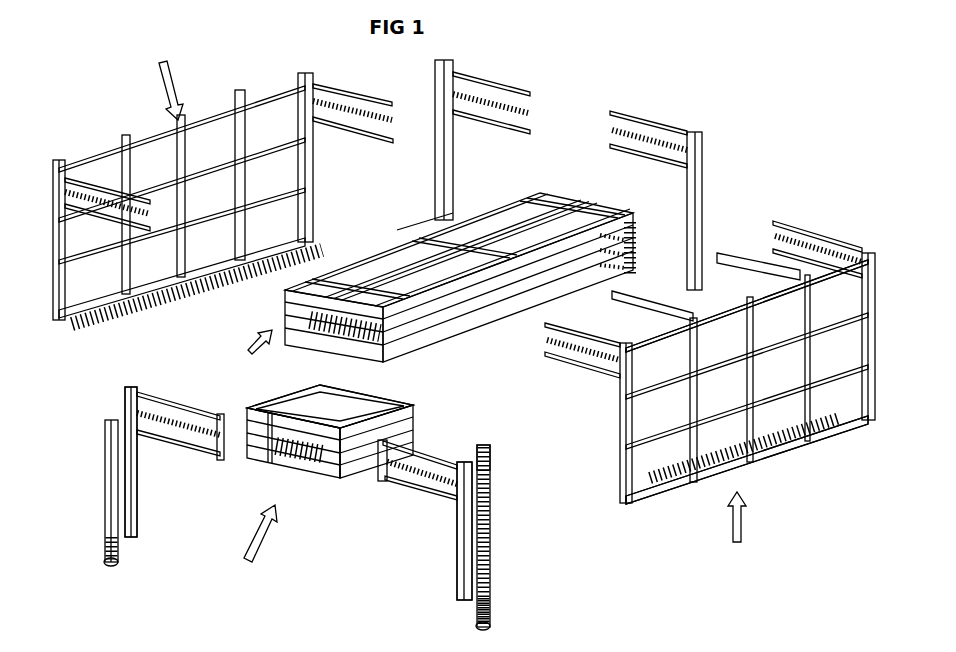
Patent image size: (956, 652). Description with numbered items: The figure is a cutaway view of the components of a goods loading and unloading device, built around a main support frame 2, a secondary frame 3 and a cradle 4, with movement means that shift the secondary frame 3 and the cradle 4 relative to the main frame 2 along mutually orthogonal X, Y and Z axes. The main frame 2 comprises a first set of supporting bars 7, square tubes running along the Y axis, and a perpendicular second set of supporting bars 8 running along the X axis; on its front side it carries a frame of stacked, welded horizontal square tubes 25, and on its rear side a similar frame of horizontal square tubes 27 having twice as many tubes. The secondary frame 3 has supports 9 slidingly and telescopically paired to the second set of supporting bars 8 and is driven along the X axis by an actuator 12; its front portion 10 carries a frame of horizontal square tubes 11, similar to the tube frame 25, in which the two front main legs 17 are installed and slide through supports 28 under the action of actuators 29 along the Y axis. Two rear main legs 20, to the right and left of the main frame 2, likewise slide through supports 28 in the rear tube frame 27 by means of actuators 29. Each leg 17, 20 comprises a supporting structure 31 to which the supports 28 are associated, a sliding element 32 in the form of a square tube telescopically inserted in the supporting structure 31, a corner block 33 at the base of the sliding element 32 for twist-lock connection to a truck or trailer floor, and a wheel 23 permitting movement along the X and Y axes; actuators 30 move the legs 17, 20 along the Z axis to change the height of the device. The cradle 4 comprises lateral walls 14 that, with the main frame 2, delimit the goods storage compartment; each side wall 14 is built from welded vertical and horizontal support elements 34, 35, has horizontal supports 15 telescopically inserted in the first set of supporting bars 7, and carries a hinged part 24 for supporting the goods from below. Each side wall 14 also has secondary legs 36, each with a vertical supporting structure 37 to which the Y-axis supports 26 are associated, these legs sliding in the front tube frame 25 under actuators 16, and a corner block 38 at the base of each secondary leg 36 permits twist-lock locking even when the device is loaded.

The main support frame 2 is at (249, 355).
The secondary frame 3 is at (253, 539).
The cradle 4 is at (449, 294).
The first set of supporting bars 7 is at (480, 232).
The second set of supporting bars 8 is at (394, 245).
The supports 9 is at (393, 403).
The front portion 10 is at (263, 460).
The frame of horizontal square tubes 11 is at (345, 438).
The actuator 12 is at (307, 420).
The lateral walls 14 is at (775, 380).
The supports 15 is at (733, 268).
The actuators 16 is at (543, 348).
The main legs 17 is at (133, 530).
The main legs 20 is at (450, 137).
The wheel 23 is at (113, 567).
The parts 24 is at (247, 288).
The frame of horizontal square tubes 25 is at (388, 345).
The supports 26 is at (540, 328).
The frame of horizontal square tubes 27 is at (637, 268).
The supports 28 is at (222, 462).
The actuators 29 is at (497, 93).
The actuators 30 is at (488, 467).
The supporting structure 31 is at (123, 408).
The sliding element 32 is at (105, 487).
The corner block 33 is at (108, 542).
The vertical and horizontal support elements 34 is at (863, 307).
The vertical and horizontal support elements 35 is at (722, 353).
The secondary legs 36 is at (877, 332).
The vertical supporting structure 37 is at (686, 330).
The corner block 38 is at (620, 500).